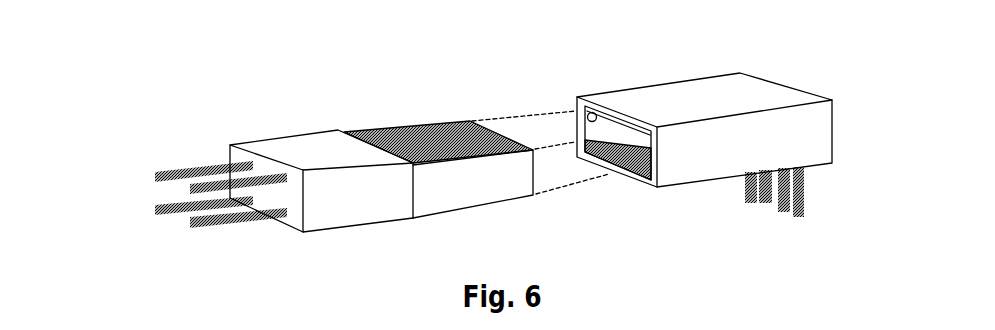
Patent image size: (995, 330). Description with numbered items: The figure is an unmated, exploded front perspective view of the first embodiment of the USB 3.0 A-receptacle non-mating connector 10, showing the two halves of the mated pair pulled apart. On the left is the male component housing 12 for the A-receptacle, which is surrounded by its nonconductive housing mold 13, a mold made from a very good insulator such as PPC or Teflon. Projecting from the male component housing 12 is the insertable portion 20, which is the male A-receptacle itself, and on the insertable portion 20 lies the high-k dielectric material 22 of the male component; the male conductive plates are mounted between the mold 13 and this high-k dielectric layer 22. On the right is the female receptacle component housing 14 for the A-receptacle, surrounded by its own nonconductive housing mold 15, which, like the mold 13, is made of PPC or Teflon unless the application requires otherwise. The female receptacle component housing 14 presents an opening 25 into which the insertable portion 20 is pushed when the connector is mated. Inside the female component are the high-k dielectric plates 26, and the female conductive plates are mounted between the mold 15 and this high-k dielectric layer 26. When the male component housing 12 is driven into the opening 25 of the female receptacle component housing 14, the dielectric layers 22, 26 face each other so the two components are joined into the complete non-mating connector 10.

The USB 3.0 A-receptacle non-mating connector 10 is at (284, 163).
The male component housing 12 is at (250, 141).
The nonconductive housing mold 13 is at (322, 224).
The insertable portion 20 is at (466, 190).
The high-k dielectric material 22 is at (453, 124).
The opening 25 is at (577, 112).
The female receptacle component housing 14 is at (704, 138).
The nonconductive housing mold 15 is at (663, 92).
The high-k dielectric plates 26 is at (632, 171).